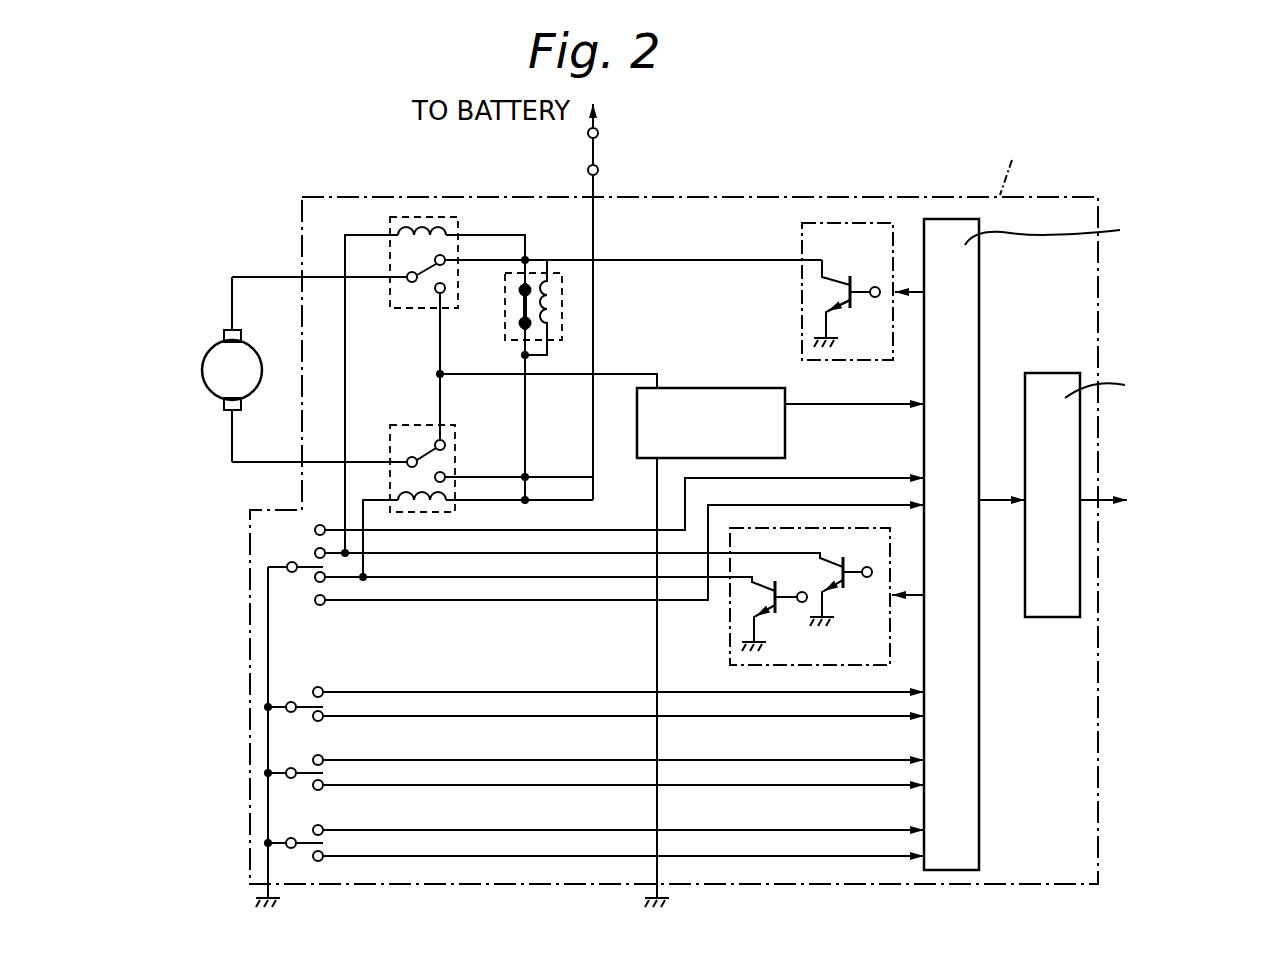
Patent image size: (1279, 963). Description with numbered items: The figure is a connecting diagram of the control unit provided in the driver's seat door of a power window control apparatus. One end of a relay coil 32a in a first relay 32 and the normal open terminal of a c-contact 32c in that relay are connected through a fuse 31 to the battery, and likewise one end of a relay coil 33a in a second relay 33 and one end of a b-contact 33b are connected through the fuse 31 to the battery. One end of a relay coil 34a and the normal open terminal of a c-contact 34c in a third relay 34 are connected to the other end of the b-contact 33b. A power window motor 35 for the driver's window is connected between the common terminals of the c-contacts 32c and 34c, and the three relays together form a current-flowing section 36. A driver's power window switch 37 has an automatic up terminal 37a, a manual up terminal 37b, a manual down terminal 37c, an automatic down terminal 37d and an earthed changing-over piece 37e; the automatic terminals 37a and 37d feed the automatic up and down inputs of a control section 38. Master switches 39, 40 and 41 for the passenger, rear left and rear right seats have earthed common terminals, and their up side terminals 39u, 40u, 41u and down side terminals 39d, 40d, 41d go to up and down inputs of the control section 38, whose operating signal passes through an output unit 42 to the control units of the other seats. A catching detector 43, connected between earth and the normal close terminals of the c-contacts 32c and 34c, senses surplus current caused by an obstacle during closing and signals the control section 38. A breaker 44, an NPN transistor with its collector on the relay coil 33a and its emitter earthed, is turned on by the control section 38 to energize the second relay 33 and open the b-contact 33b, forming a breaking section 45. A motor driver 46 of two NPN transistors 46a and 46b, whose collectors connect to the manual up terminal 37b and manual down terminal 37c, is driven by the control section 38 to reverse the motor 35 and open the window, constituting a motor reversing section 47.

The fuse 31 is at (674, 508).
The first relay 32 is at (438, 516).
The relay coil 32a is at (440, 506).
The c-contact 32c is at (448, 456).
The second relay 33 is at (550, 287).
The relay coil 33a is at (552, 279).
The b-contact 33b is at (505, 314).
The third relay 34 is at (404, 250).
The relay coil 34a is at (436, 224).
The c-contact 34c is at (418, 282).
The power window motor 35 is at (203, 360).
The current-flowing section 36 is at (373, 318).
The power window switch 37 is at (535, 572).
The automatic up terminal 37a is at (318, 526).
The manual up terminal 37b is at (317, 549).
The manual down terminal 37c is at (317, 581).
The automatic down terminal 37d is at (325, 606).
The changing-over piece 37e is at (310, 560).
The control section 38 is at (979, 298).
The master switch 39 is at (541, 697).
The up side terminal 39u is at (323, 691).
The down side terminal 39d is at (316, 720).
The master switch 40 is at (533, 776).
The up side terminal 40u is at (323, 759).
The down side terminal 40d is at (316, 788).
The master switch 41 is at (550, 863).
The up side terminal 41u is at (323, 828).
The down side terminal 41d is at (320, 862).
The output unit 42 is at (1050, 620).
The catching detector 43 is at (701, 386).
The breaker 44 is at (798, 332).
The breaking section 45 is at (834, 246).
The motor driver 46 is at (600, 619).
The NPN transistor 46a is at (853, 587).
The NPN transistor 46b is at (776, 620).
The motor reversing section 47 is at (624, 556).